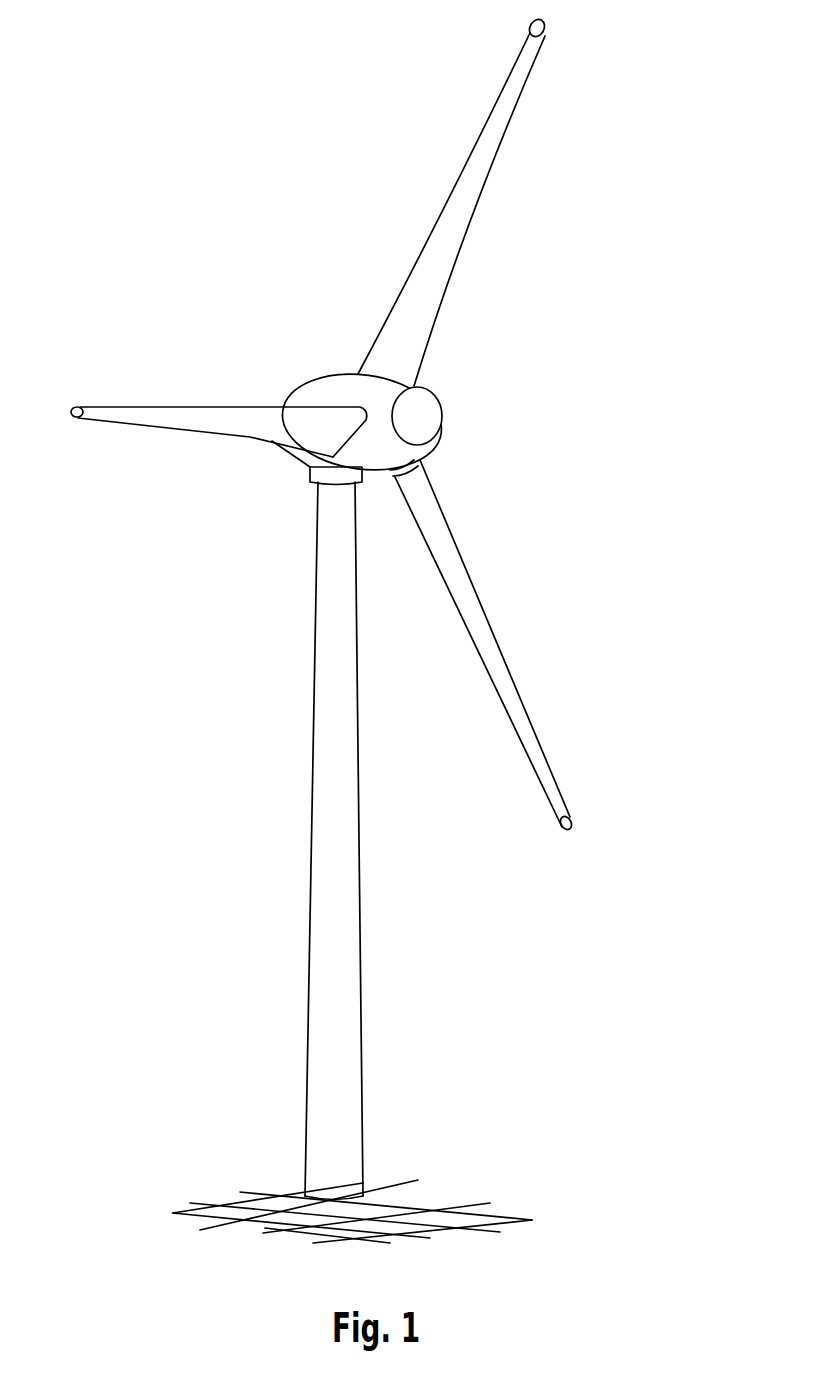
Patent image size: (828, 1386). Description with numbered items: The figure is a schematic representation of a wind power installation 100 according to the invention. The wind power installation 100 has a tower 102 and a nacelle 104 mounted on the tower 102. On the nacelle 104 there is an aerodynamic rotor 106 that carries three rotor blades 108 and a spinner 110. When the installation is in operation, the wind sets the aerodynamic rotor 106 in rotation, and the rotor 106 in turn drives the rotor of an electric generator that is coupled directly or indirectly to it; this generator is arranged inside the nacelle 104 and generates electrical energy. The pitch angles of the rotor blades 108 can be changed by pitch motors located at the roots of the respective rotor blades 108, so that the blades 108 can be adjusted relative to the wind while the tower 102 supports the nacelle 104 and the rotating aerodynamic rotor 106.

The wind power installation 100 is at (268, 555).
The tower 102 is at (340, 952).
The nacelle 104 is at (328, 392).
The aerodynamic rotor 106 is at (510, 338).
The rotor blades 108 is at (487, 157).
The spinner 110 is at (427, 418).